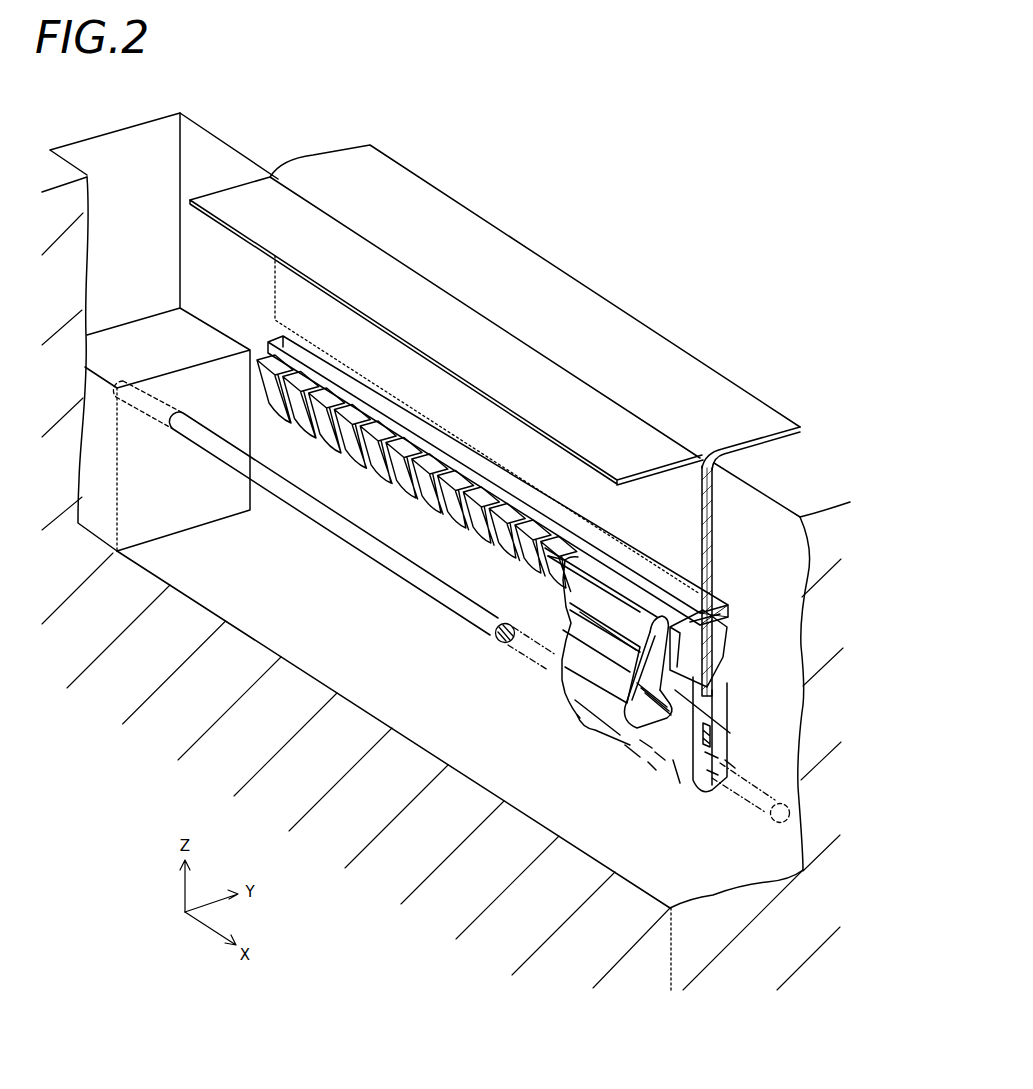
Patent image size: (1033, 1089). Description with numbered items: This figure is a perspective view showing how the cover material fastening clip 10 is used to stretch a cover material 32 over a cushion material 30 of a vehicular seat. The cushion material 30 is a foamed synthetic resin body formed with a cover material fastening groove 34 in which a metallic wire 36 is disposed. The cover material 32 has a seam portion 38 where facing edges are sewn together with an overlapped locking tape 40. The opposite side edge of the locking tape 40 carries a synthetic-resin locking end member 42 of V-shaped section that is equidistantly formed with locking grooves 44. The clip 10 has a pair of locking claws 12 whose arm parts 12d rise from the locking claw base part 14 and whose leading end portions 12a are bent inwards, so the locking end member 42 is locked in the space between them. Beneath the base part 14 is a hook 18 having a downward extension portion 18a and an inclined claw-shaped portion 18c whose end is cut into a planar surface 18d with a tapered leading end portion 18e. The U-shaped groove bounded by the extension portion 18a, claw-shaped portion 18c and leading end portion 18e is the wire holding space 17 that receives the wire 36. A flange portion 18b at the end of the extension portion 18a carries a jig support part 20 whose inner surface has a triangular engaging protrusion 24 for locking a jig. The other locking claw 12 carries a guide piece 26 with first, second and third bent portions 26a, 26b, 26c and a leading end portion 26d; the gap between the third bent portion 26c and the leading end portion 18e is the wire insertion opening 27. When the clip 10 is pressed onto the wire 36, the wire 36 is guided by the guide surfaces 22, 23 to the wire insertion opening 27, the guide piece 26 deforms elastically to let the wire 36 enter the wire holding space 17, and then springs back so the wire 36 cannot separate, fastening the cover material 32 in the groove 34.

The cover material fastening clip 10 is at (737, 652).
The locking claws 12 is at (516, 633).
The leading end portions 12a is at (607, 577).
The arm parts 12d is at (518, 583).
The locking claw base part 14 is at (680, 738).
The wire holding space 17 is at (728, 765).
The hook 18 is at (693, 772).
The extension portion 18a is at (712, 731).
The flange portion 18b is at (707, 787).
The claw-shaped portion 18c is at (673, 773).
The planar surface 18d is at (647, 747).
The leading end portion 18e is at (655, 752).
The jig support part 20 is at (723, 710).
The guide surface 22 is at (632, 755).
The guide surface 23 is at (650, 762).
The engaging protrusion 24 is at (705, 757).
The guide piece 26 is at (575, 699).
The first bent portion 26a is at (570, 705).
The second bent portion 26b is at (575, 700).
The third bent portion 26c is at (603, 722).
The leading end portion 26d is at (622, 735).
The wire insertion opening 27 is at (728, 698).
The cushion material 30 is at (107, 118).
The cover material 32 is at (500, 328).
The cover material fastening groove 34 is at (148, 143).
The wire 36 is at (360, 542).
The seam portion 38 is at (650, 535).
The locking tape 40 is at (722, 576).
The locking end member 42 is at (378, 432).
The locking grooves 44 is at (342, 408).